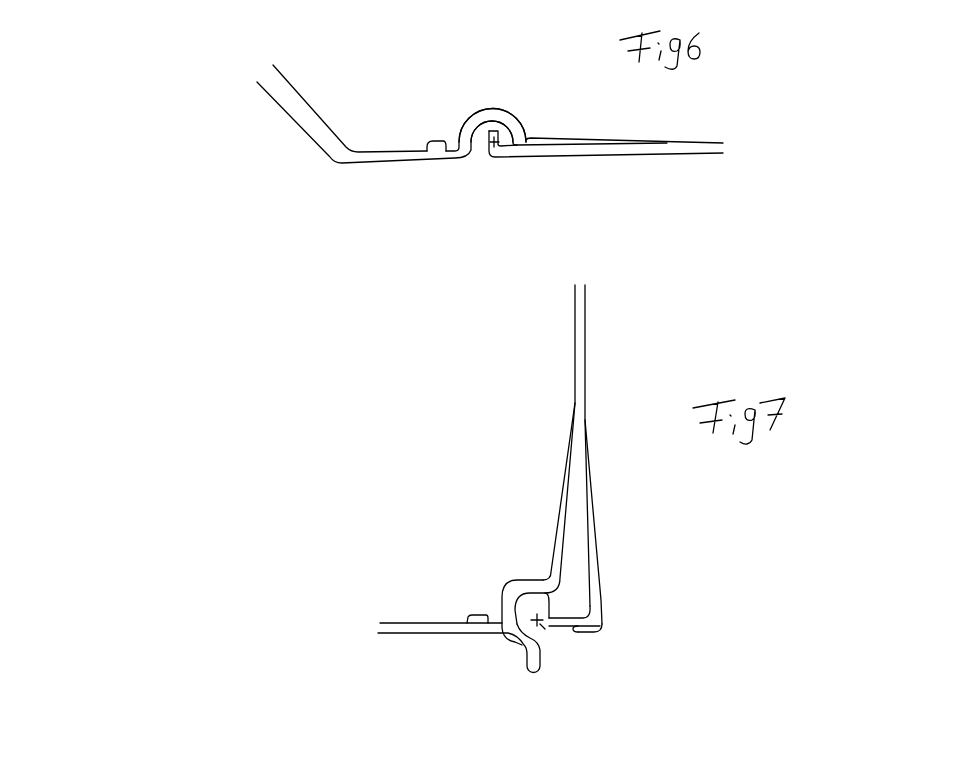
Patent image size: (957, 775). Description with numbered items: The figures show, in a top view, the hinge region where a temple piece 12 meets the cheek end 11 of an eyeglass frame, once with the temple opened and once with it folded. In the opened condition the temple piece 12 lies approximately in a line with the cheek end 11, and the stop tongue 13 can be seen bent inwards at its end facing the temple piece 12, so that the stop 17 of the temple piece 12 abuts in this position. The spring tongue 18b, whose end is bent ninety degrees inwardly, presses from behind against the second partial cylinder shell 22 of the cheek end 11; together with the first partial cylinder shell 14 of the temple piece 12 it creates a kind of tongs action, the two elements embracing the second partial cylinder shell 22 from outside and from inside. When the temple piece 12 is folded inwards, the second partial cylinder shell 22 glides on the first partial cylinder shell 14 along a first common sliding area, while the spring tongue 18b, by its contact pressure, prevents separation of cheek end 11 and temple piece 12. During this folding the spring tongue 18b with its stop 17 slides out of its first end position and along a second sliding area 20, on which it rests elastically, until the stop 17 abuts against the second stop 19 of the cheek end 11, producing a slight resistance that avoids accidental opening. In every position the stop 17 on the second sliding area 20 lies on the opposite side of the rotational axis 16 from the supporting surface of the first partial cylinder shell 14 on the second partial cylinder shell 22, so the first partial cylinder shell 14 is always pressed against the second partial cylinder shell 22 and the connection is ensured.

In FIG. 6, the cheek end 11 is at (347, 160).
In FIG. 7, the cheek end 11 is at (410, 628).
In FIG. 6, the temple piece 12 is at (673, 150).
In FIG. 7, the temple piece 12 is at (582, 293).
In FIG. 6, the stop tongue 13 is at (435, 140).
In FIG. 6, the first partial cylinder shell 14 is at (493, 112).
In FIG. 7, the first partial cylinder shell 14 is at (500, 603).
In FIG. 7, the rotational axis 16 is at (537, 617).
In FIG. 7, the stop 17 is at (594, 635).
In FIG. 6, the spring tongue 18b is at (507, 153).
In FIG. 7, the spring tongue 18b is at (593, 572).
In FIG. 7, the second stop 19 is at (570, 638).
In FIG. 7, the second sliding area 20 is at (594, 620).
In FIG. 6, the second partial cylinder shell 22 is at (482, 128).
In FIG. 7, the second partial cylinder shell 22 is at (520, 613).